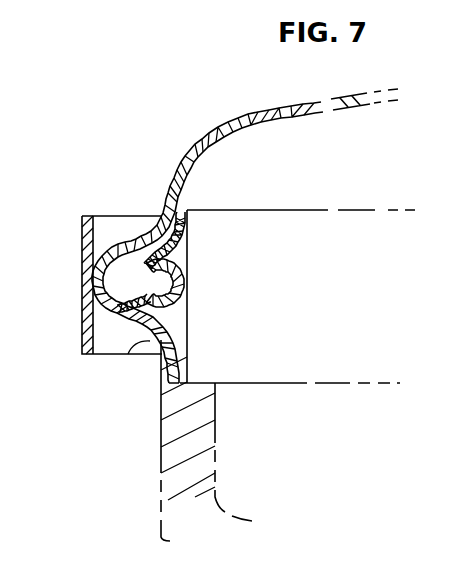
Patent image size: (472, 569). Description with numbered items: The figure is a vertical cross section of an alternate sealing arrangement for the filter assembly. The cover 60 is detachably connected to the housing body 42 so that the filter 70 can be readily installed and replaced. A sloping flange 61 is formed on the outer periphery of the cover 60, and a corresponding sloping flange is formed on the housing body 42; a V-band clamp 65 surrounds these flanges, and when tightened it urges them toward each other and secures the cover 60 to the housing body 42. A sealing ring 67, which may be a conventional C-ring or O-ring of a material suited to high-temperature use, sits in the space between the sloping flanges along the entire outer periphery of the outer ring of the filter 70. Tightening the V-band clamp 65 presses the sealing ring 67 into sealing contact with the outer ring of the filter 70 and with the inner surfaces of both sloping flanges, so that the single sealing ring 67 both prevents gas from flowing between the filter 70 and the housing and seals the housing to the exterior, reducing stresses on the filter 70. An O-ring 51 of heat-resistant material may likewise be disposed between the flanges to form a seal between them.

The cover 60 is at (250, 116).
The flange 61 is at (157, 217).
The V-band clamp 65 is at (82, 283).
The sealing ring 67 is at (175, 275).
The O-ring 51 is at (135, 348).
The housing body 42 is at (161, 465).
The filter 70 is at (252, 383).